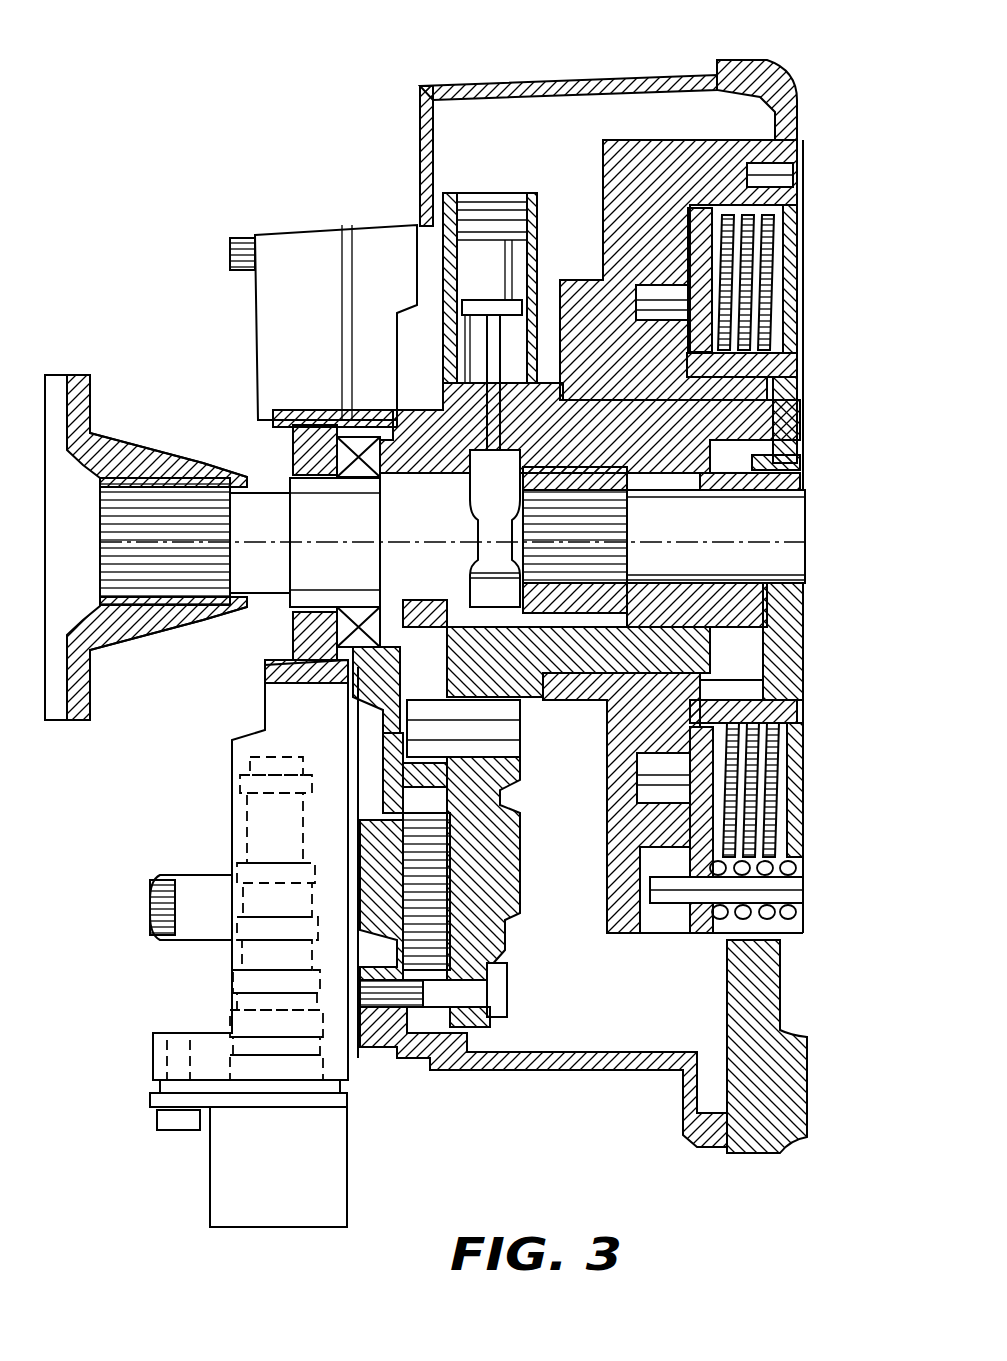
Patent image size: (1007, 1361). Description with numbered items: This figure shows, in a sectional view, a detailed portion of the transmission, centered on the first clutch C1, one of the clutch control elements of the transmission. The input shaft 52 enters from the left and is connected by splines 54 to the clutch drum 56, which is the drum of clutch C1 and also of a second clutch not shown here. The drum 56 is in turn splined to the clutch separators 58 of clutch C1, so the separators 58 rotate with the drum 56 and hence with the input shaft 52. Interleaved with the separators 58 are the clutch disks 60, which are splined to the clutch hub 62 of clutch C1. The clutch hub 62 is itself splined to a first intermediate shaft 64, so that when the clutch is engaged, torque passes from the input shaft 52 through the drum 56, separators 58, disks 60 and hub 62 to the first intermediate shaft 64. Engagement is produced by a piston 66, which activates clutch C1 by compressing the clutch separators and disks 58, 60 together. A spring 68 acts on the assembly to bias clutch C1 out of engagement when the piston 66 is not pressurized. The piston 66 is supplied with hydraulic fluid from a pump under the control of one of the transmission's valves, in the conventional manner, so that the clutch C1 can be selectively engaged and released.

The input shaft 52 is at (262, 505).
The splines 54 is at (800, 462).
The clutch drum 56 is at (628, 135).
The clutch separators 58 is at (731, 213).
The clutch disks 60 is at (720, 277).
The clutch hub 62 is at (797, 372).
The first intermediate shaft 64 is at (800, 480).
The piston 66 is at (643, 296).
The spring 68 is at (803, 912).
The clutch C1 is at (699, 190).